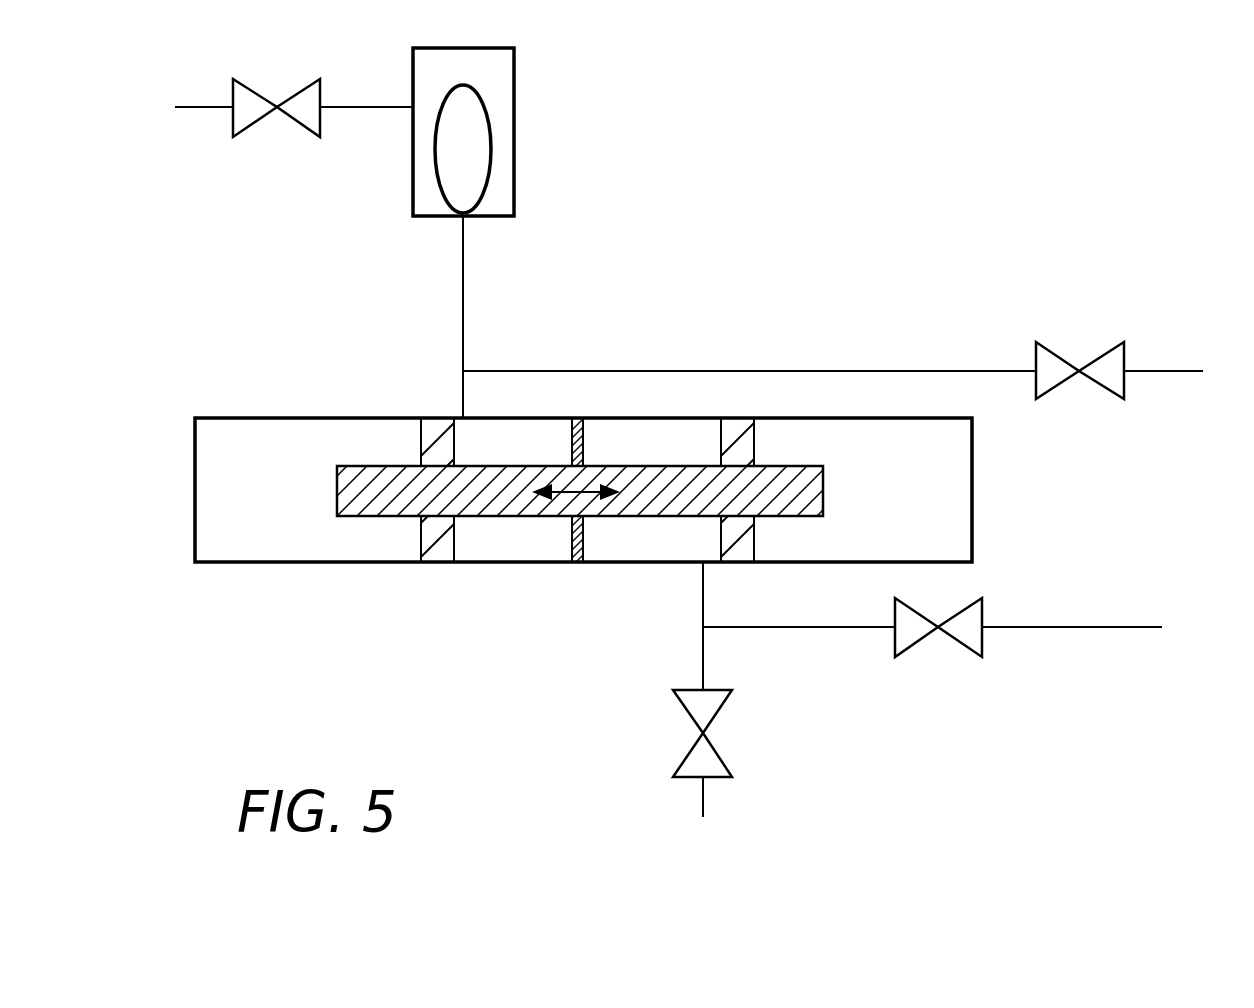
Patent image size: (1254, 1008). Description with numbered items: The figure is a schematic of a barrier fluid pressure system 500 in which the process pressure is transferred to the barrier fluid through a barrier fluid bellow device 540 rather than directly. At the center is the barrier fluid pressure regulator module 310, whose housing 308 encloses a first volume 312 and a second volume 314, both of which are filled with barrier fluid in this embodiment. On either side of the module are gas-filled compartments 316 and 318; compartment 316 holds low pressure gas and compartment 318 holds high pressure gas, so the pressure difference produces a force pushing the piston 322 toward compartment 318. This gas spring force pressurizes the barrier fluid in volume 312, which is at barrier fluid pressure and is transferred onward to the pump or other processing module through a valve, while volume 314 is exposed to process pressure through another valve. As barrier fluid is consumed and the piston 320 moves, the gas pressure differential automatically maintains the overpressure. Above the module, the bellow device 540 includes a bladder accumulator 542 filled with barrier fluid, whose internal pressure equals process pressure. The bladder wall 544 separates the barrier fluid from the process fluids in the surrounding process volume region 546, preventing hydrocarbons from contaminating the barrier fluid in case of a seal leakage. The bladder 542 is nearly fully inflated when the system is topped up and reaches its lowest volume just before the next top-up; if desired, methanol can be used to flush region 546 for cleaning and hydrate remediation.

The barrier fluid pressure system 500 is at (1062, 56).
The housing 308 is at (972, 457).
The barrier fluid pressure regulator module 310 is at (453, 622).
The first volume 312 is at (652, 490).
The second volume 314 is at (513, 490).
The gas-filled compartment 316 is at (862, 490).
The gas-filled compartment 318 is at (309, 490).
The piston 320 is at (588, 562).
The piston 322 is at (383, 512).
The barrier fluid bellow device 540 is at (514, 165).
The bladder accumulator 542 is at (467, 188).
The bladder wall 544 is at (487, 113).
The process volume region 546 is at (430, 82).